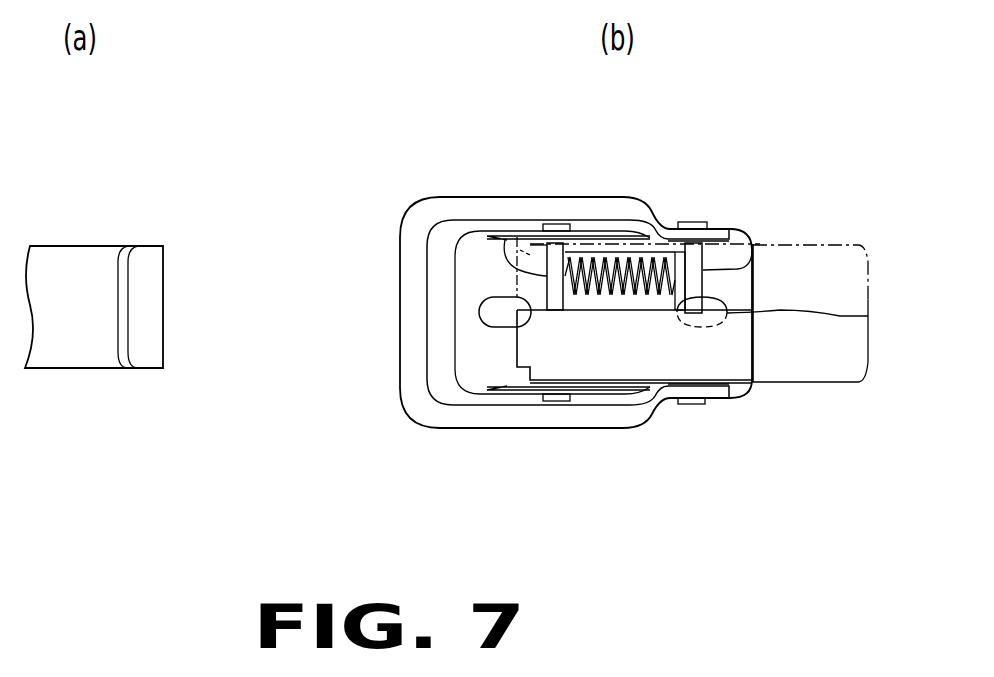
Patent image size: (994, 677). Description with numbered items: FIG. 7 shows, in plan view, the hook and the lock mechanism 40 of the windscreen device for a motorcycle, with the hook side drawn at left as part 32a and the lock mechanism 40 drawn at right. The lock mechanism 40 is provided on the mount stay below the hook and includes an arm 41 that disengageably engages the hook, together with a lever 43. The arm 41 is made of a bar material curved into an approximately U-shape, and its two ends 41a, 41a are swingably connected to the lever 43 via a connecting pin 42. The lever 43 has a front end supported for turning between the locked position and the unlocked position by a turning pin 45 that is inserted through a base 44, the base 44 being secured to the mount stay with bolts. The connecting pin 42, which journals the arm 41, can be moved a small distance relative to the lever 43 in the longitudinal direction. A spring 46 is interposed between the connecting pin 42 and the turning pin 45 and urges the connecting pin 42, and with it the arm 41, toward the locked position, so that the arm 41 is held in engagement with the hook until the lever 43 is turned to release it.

The mating connector end portion 32a is at (97, 369).
The lock mechanism 40 is at (617, 291).
The arm 41 is at (477, 192).
The ends of the arm 41a is at (717, 216).
The connecting pin 42 is at (750, 248).
The lever 43 is at (813, 385).
The base 44 is at (453, 362).
The turning pin 45 is at (512, 238).
The spring 46 is at (603, 262).